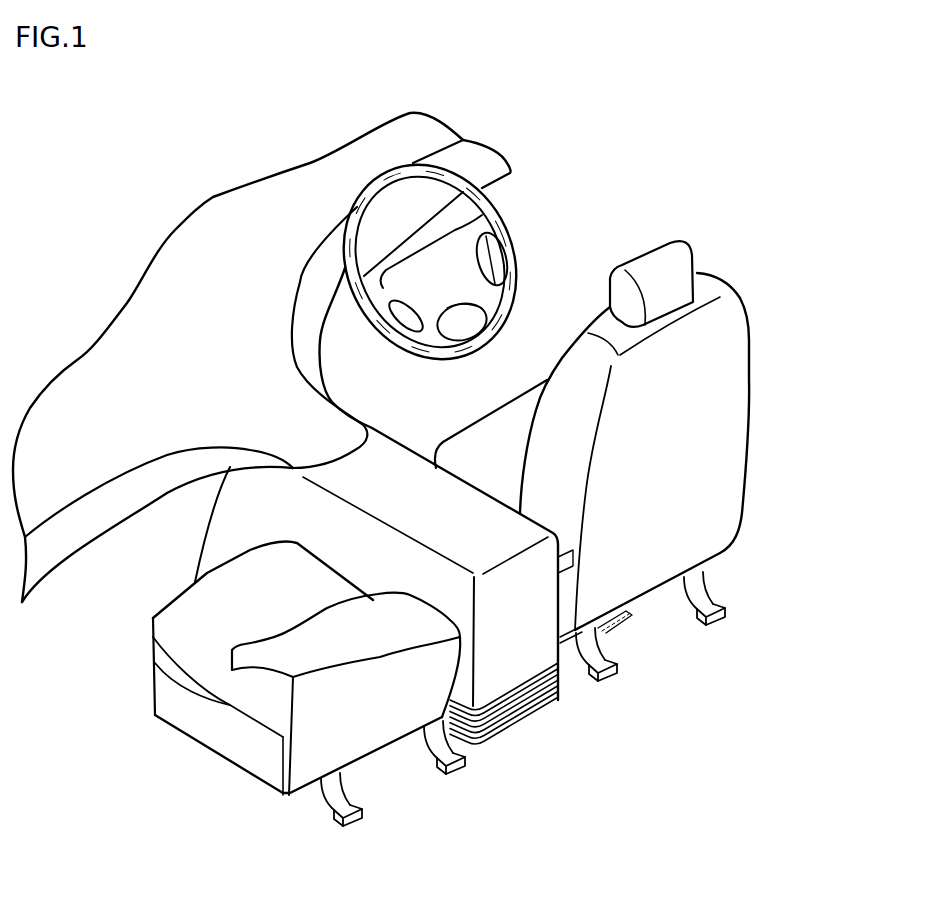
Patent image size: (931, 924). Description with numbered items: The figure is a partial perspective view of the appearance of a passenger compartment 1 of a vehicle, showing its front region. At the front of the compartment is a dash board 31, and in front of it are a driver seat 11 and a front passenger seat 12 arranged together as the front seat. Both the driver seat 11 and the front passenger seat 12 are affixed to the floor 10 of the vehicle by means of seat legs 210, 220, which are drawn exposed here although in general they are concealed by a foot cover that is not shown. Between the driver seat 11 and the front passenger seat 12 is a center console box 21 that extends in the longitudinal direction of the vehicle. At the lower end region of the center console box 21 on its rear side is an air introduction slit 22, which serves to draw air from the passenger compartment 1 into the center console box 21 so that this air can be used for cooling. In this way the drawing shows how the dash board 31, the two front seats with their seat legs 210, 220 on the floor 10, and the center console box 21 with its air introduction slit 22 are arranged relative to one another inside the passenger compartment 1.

The passenger compartment 1 is at (631, 750).
The floor 10 is at (408, 787).
The driver seat 11 is at (728, 405).
The front passenger seat 12 is at (180, 618).
The center console box 21 is at (527, 653).
The air introduction slit 22 is at (527, 707).
The seat legs 210 is at (600, 652).
The seat legs 220 is at (337, 803).
The dash board 31 is at (173, 315).